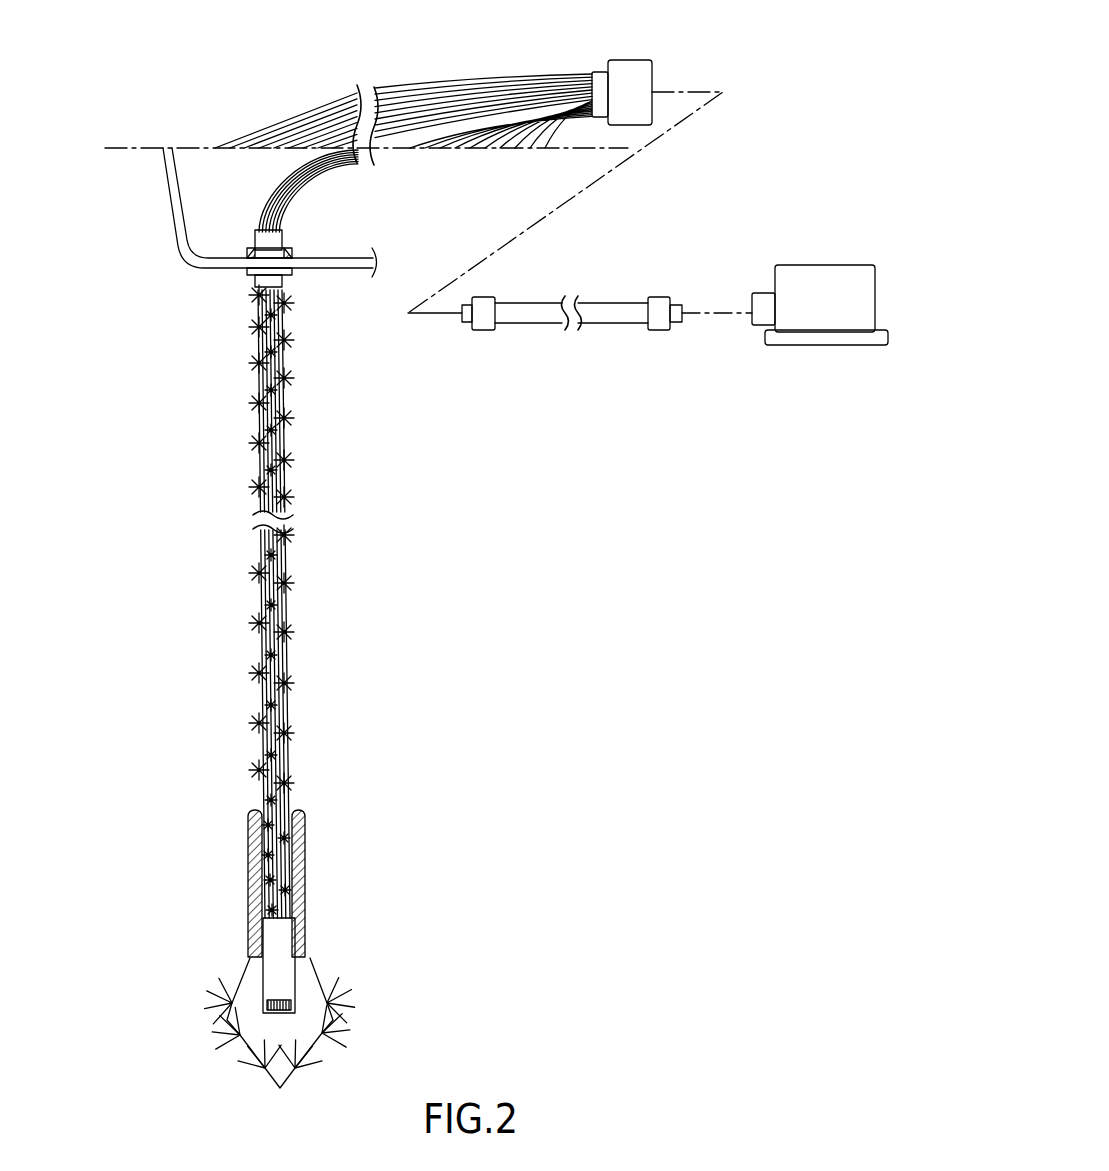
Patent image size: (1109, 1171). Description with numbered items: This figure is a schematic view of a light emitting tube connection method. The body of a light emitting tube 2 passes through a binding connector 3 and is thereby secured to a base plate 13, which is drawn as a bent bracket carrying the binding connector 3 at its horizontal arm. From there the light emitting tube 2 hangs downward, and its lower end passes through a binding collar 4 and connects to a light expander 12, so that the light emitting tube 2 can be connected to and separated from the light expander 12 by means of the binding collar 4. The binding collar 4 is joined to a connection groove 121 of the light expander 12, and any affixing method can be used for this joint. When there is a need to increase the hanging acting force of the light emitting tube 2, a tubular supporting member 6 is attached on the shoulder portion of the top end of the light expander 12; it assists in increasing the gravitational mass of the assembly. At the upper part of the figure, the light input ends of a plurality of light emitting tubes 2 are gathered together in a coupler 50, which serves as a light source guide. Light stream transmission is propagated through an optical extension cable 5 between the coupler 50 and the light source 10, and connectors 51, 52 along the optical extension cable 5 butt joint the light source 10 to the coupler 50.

The light emitting tube 2 is at (322, 602).
The binding connector 3 is at (225, 287).
The binding collar 4 is at (282, 940).
The optical extension cable 5 is at (547, 312).
The tubular supporting member 6 is at (305, 867).
The light source 10 is at (823, 307).
The light expander 12 is at (237, 1017).
The base plate 13 is at (182, 213).
The coupler 50 is at (633, 78).
The connector 51 is at (482, 315).
The connector 52 is at (658, 312).
The connection groove 121 is at (262, 1001).